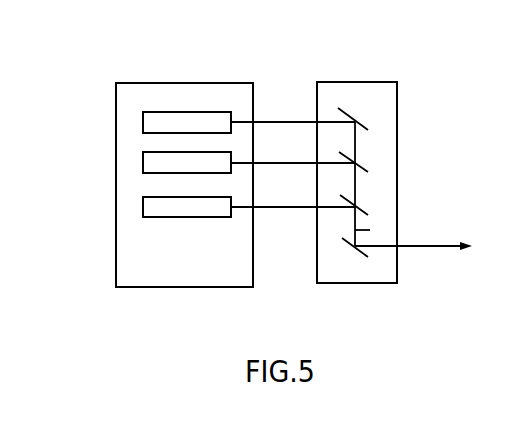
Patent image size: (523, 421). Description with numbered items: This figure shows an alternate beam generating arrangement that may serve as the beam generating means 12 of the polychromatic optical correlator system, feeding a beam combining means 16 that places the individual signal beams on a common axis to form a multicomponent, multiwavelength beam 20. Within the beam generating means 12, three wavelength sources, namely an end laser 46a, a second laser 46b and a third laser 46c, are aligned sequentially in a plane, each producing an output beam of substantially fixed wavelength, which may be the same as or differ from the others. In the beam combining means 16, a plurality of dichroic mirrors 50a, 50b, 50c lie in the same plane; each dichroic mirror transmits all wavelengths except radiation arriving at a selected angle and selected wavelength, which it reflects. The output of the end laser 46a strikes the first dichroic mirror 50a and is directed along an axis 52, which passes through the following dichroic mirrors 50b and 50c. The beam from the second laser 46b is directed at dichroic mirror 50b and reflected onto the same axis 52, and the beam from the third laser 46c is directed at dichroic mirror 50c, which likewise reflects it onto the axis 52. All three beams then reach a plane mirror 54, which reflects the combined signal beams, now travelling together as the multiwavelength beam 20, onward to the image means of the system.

The beam generating means 12 is at (222, 82).
The beam combining means 16 is at (370, 80).
The multicomponent, multiwavelength beam 20 is at (447, 249).
The end laser 46a is at (167, 112).
The second laser 46b is at (150, 173).
The third laser 46c is at (172, 217).
The first dichroic mirror 50a is at (365, 125).
The second dichroic mirror 50b is at (365, 168).
The third dichroic mirror 50c is at (365, 211).
The axis 52 is at (370, 230).
The plane mirror 54 is at (360, 258).